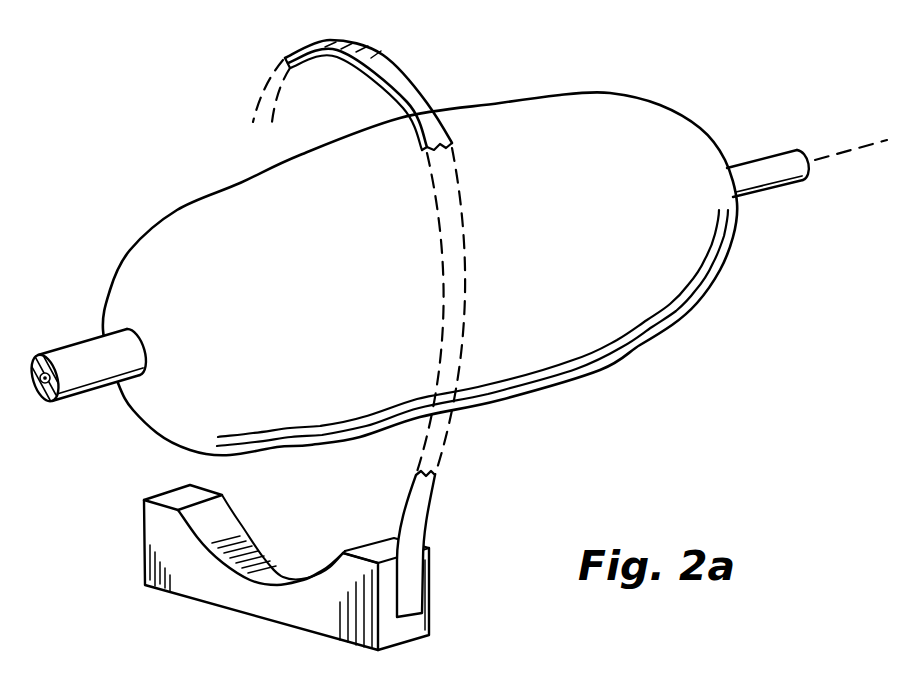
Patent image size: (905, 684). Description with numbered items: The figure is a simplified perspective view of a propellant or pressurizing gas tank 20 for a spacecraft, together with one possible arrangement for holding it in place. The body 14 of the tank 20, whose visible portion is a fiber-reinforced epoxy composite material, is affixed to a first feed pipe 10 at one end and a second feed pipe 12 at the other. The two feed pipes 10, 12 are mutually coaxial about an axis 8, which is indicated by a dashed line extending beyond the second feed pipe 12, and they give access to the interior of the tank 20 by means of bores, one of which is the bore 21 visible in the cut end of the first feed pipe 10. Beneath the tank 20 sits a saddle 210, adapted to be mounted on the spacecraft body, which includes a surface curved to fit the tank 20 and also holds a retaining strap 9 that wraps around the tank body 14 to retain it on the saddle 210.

The axis 8 is at (861, 149).
The retaining strap 9 is at (402, 62).
The first feed pipe 10 is at (100, 393).
The second feed pipe 12 is at (753, 160).
The tank body 14 is at (180, 212).
The tank 20 is at (495, 356).
The bore 21 is at (43, 403).
The saddle 210 is at (212, 603).